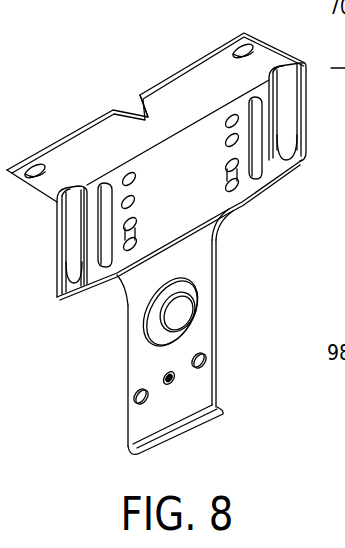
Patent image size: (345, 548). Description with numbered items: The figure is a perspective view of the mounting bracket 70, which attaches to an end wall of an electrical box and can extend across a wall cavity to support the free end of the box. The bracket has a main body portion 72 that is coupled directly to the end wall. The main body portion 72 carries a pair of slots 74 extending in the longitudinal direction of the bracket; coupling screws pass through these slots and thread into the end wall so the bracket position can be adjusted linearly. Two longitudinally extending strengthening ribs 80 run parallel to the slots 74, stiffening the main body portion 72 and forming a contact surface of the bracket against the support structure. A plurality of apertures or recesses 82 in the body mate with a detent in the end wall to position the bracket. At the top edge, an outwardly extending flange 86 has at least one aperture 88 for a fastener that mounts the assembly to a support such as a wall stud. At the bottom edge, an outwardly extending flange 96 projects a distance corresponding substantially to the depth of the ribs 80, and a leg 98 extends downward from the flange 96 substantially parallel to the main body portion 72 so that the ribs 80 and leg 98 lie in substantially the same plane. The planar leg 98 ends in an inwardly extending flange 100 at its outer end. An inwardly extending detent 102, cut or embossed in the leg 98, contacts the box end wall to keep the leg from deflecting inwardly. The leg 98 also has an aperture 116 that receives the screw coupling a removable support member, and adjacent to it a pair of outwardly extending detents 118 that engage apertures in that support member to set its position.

The mounting bracket 70 is at (79, 118).
The main body portion 72 is at (165, 164).
The slots 74 is at (110, 248).
The strengthening ribs 80 is at (70, 245).
The apertures or recesses 82 is at (224, 172).
The flange 86 is at (192, 78).
The aperture 88 is at (35, 166).
The flange 96 is at (234, 212).
The leg 98 is at (197, 340).
The flange 100 is at (172, 447).
The detent 102 is at (178, 317).
The aperture 116 is at (163, 374).
The detents 118 is at (130, 407).